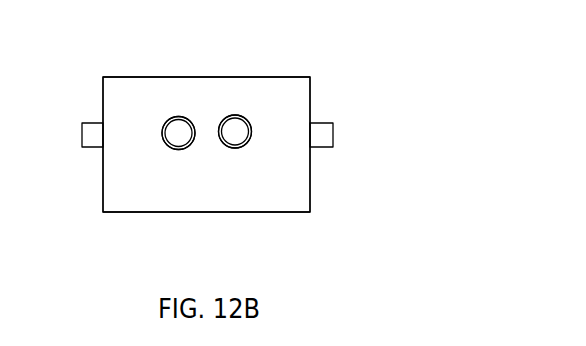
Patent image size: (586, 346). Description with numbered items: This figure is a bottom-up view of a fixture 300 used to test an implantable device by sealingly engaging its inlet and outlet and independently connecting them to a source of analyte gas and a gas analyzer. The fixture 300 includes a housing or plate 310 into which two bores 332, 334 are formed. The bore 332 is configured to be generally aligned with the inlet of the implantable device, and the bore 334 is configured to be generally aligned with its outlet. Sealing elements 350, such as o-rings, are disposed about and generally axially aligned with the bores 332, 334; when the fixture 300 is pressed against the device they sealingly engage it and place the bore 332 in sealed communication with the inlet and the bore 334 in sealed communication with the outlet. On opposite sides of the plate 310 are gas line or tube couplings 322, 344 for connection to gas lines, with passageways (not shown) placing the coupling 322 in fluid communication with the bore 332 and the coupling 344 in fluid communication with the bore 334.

The fixture 300 is at (340, 82).
The housing or plate 310 is at (138, 94).
The gas line or tube coupling 322 is at (84, 132).
The bore 332 is at (181, 134).
The bore 334 is at (237, 128).
The gas line or tube coupling 344 is at (336, 130).
The sealing elements 350 is at (193, 155).